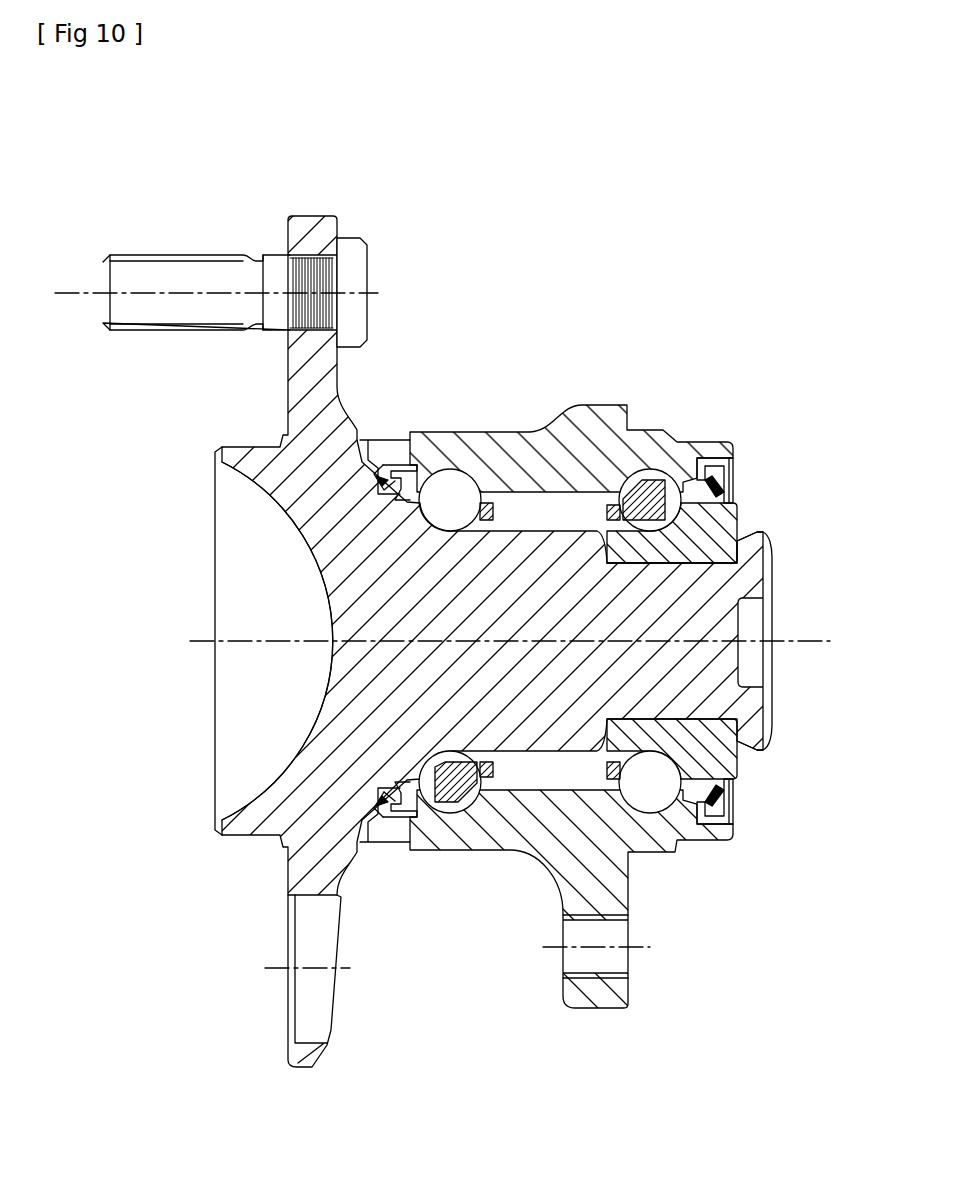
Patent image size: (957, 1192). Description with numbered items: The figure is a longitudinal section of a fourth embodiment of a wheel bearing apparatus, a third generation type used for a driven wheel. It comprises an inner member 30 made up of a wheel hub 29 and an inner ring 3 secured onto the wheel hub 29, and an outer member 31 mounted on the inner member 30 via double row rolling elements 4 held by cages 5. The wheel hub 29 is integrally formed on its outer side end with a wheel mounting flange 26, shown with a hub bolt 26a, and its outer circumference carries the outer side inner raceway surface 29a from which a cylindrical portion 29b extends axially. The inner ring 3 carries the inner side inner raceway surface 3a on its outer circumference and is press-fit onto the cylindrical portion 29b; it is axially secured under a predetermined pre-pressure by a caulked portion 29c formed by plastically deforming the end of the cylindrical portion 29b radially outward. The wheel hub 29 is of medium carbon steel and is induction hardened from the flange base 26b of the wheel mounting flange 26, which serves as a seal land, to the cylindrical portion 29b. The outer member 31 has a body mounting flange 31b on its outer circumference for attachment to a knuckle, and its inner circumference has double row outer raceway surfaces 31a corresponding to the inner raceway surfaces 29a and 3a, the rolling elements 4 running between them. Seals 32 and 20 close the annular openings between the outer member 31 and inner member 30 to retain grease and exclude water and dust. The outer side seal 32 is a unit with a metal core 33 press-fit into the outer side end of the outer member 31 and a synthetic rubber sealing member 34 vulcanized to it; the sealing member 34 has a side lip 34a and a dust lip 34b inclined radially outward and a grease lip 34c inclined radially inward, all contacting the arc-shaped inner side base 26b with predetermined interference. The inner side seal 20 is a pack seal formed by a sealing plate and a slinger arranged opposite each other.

The inner ring 3 is at (699, 553).
The inner raceway surface 3a is at (658, 520).
The rolling elements 4 is at (628, 804).
The cages 5 is at (605, 762).
The inner side seal 20 is at (723, 482).
The wheel mounting flange 26 is at (216, 257).
The threaded portion of hub bolt 26a is at (175, 267).
The flange base 26b is at (370, 460).
The wheel hub 29 is at (303, 525).
The inner raceway surface 29a is at (440, 513).
The cylindrical portion 29b is at (692, 558).
The caulked portion 29c is at (755, 541).
The inner member 30 is at (261, 603).
The outer member 31 is at (571, 724).
The outer raceway surfaces 31a is at (452, 493).
The body mounting flange 31b is at (587, 1002).
The outer side seal 32 is at (252, 864).
The metal core 33 is at (397, 820).
The sealing member 34 is at (277, 847).
The side lip 34a is at (392, 806).
The dust lip 34b is at (388, 798).
The grease lip 34c is at (385, 790).